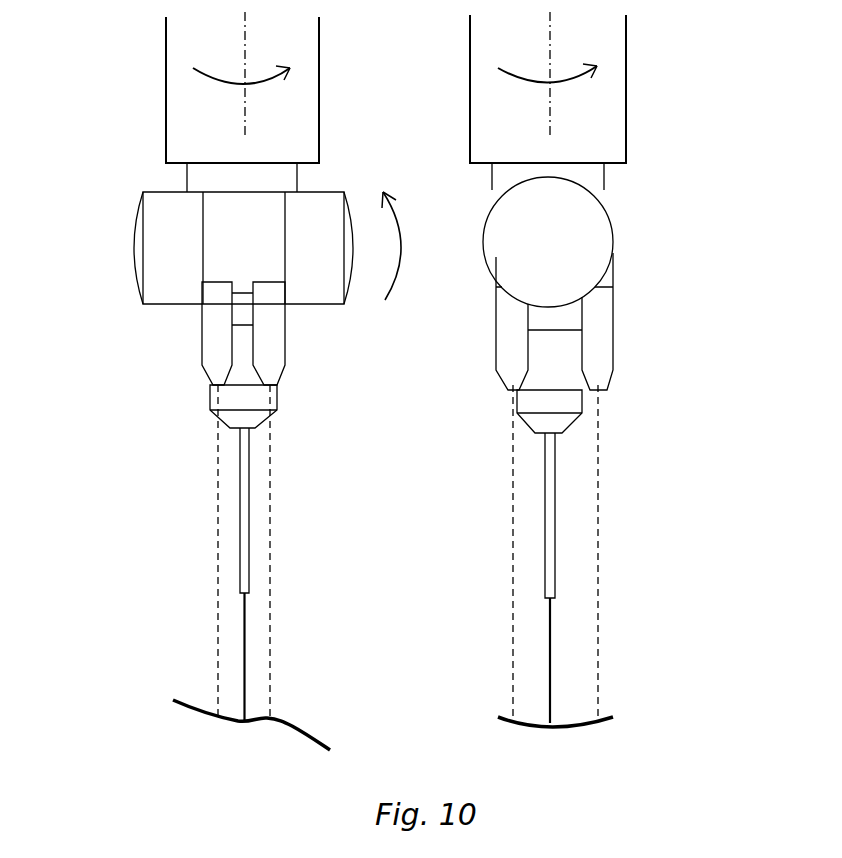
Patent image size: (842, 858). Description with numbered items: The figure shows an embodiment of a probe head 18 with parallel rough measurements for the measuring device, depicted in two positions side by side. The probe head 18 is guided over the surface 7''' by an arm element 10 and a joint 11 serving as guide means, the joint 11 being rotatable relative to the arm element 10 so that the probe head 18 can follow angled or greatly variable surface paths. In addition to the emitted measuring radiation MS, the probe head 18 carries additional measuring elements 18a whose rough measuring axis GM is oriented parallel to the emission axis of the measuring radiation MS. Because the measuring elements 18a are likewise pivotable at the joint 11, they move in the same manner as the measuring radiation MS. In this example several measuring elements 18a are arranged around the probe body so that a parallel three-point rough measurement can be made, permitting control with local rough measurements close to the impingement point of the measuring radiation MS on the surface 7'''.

The arm element 10 is at (495, 48).
The joint 11 is at (306, 282).
The probe head 18 is at (243, 418).
The measuring elements 18a is at (260, 343).
The rough measuring axis GM is at (272, 495).
The measuring radiation MS is at (243, 635).
The surface 7''' is at (341, 703).